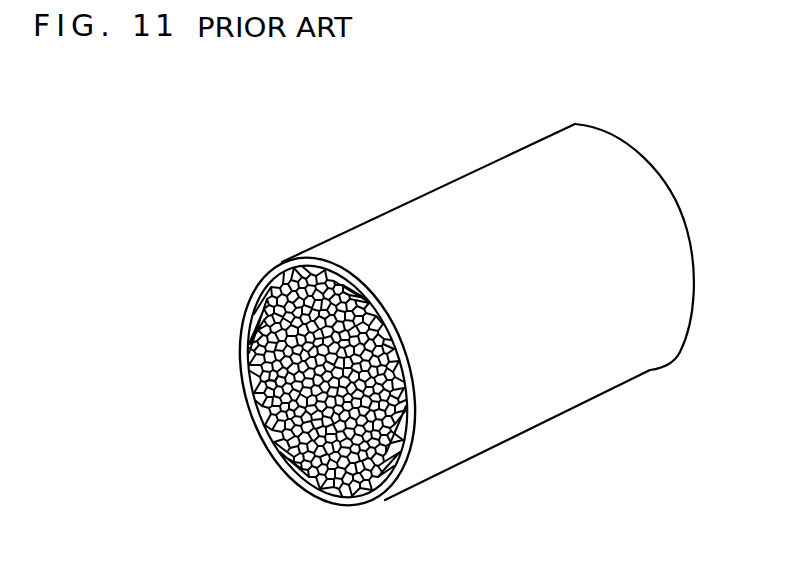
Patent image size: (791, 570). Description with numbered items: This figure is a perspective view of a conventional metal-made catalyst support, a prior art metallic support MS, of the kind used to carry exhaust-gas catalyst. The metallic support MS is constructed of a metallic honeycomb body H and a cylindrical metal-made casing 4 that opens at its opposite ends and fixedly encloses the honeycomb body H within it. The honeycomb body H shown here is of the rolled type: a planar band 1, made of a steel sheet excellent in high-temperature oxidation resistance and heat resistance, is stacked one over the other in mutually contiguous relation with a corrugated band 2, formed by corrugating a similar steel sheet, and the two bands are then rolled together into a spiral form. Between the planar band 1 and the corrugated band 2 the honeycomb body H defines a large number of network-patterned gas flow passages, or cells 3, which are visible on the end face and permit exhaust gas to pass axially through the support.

The metallic support MS is at (679, 200).
The planar band 1 is at (266, 291).
The corrugated band 2 is at (245, 305).
The network-patterned gas flow passages (cells) 3 is at (276, 438).
The cylindrical metal-made casing 4 is at (345, 248).
The metallic honeycomb body H is at (270, 375).